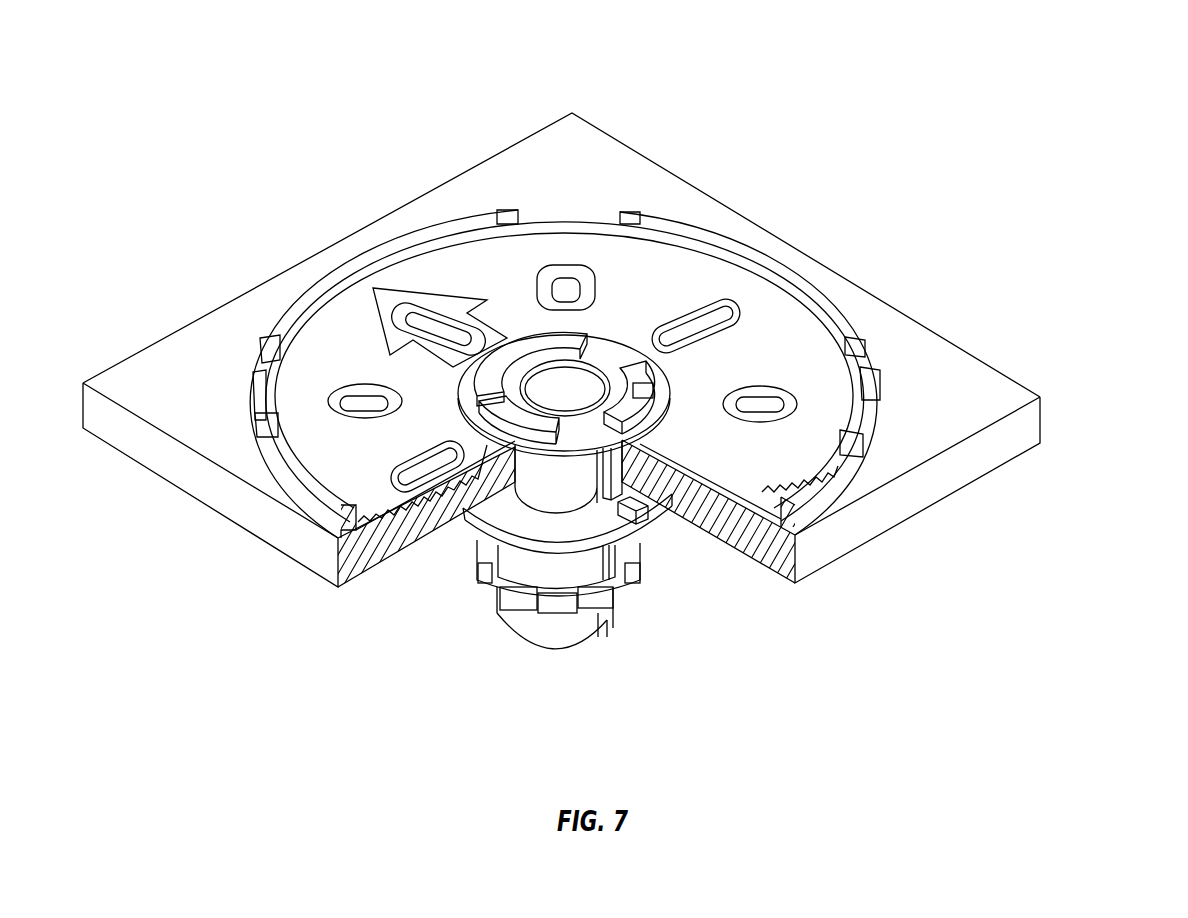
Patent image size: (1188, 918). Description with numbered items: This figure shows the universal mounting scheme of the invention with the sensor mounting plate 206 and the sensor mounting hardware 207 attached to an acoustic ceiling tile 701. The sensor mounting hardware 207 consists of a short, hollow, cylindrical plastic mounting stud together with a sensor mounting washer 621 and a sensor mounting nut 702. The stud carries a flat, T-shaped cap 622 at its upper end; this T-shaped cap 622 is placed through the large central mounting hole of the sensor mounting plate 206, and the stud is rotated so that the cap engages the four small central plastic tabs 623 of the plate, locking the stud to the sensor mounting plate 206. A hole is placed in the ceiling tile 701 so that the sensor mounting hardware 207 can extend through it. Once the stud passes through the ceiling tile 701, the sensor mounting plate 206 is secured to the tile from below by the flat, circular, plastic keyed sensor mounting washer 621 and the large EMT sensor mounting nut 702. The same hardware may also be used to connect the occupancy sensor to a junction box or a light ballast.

The sensor mounting plate 206 is at (780, 258).
The sensor mounting hardware 207 is at (535, 648).
The sensor mounting washer 621 is at (500, 497).
The T-shaped cap 622 is at (607, 357).
The central plastic tabs 623 is at (643, 388).
The ceiling tile 701 is at (1013, 372).
The sensor mounting nut 702 is at (635, 585).